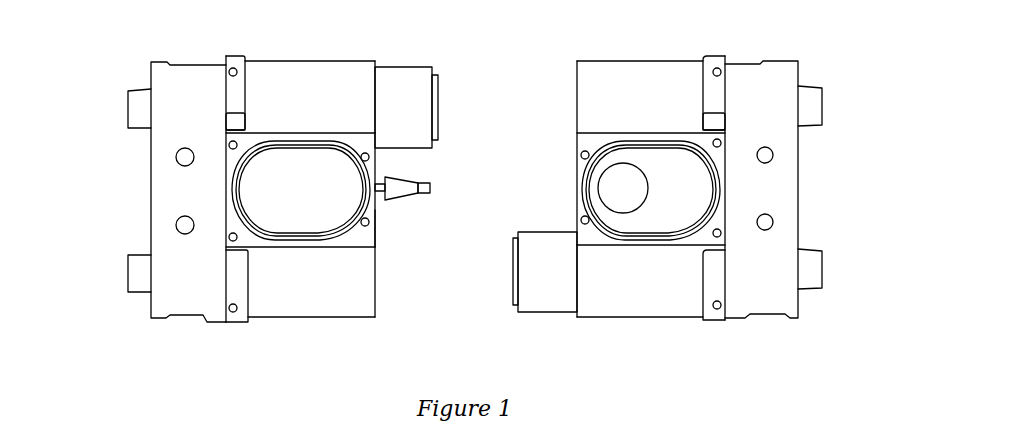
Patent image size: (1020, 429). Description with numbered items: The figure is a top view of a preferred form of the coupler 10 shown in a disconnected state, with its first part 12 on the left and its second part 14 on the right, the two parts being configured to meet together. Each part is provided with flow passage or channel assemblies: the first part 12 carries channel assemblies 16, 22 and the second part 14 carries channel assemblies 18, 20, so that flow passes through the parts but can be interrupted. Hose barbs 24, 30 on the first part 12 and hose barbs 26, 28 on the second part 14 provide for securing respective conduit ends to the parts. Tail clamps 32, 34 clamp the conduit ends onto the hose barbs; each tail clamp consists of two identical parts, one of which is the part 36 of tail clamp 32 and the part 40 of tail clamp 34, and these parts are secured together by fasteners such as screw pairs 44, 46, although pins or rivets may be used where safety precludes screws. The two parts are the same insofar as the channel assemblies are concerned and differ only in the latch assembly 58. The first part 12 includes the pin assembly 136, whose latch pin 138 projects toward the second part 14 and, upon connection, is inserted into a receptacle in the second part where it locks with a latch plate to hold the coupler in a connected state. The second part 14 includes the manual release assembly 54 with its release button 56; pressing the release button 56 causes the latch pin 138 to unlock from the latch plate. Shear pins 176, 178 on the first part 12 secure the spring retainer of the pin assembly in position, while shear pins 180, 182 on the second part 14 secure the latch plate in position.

The coupler 10 is at (452, 316).
The first part 12 is at (255, 347).
The second part 14 is at (736, 356).
The channel assembly 16 is at (333, 95).
The channel assembly 18 is at (613, 97).
The channel assembly 20 is at (628, 278).
The channel assembly 22 is at (328, 276).
The hose barb 24 is at (137, 110).
The hose barb 26 is at (808, 107).
The hose barb 28 is at (817, 272).
The hose barb 30 is at (140, 277).
The tail clamp 32 is at (177, 97).
The tail clamp 34 is at (764, 100).
The tail clamp part 36 is at (202, 98).
The tail clamp part 40 is at (768, 288).
The screw pair 44 is at (185, 160).
The screw pair 46 is at (768, 213).
The manual release assembly 54 is at (664, 162).
The release button 56 is at (612, 187).
The latch assembly 58 is at (555, 180).
The pin assembly 136 is at (386, 226).
The latch pin 138 is at (403, 206).
The shear pin 176 is at (370, 225).
The shear pin 178 is at (366, 155).
The shear pin 180 is at (585, 152).
The shear pin 182 is at (585, 224).